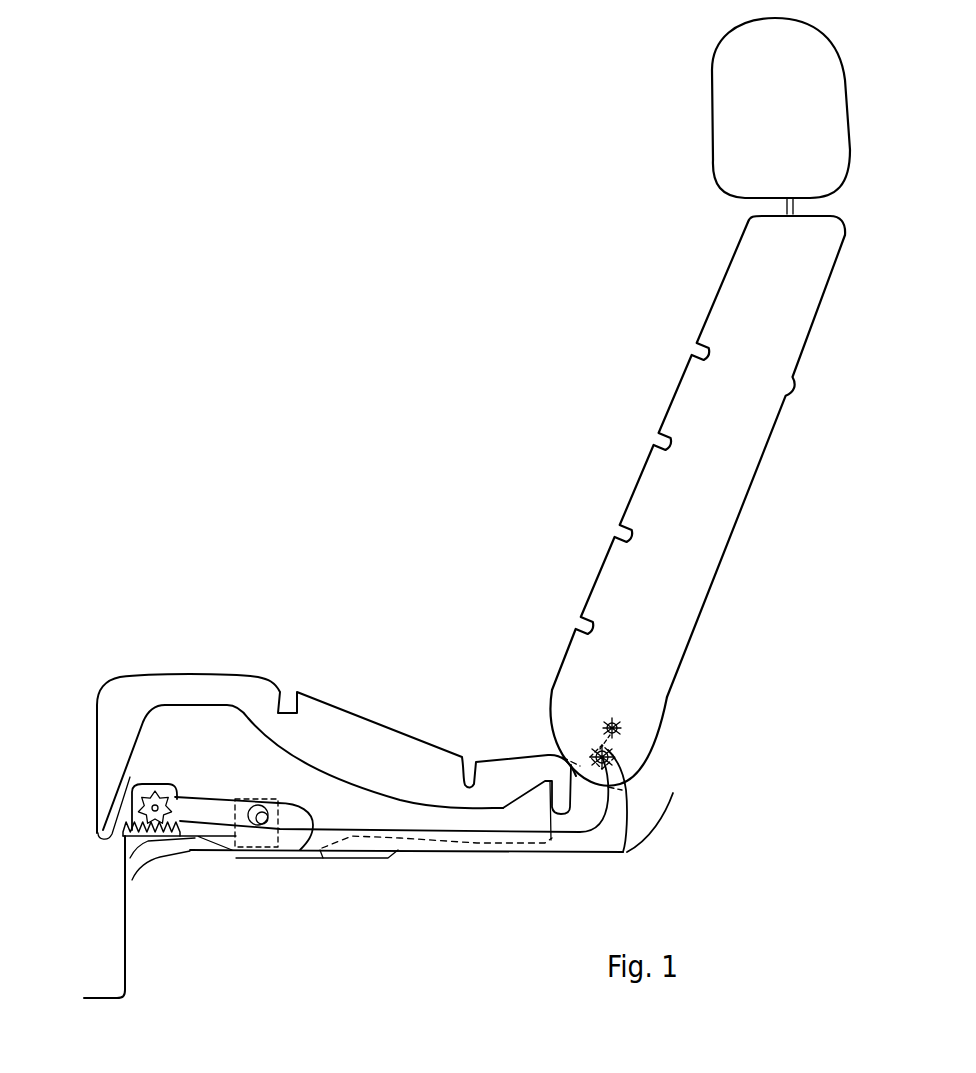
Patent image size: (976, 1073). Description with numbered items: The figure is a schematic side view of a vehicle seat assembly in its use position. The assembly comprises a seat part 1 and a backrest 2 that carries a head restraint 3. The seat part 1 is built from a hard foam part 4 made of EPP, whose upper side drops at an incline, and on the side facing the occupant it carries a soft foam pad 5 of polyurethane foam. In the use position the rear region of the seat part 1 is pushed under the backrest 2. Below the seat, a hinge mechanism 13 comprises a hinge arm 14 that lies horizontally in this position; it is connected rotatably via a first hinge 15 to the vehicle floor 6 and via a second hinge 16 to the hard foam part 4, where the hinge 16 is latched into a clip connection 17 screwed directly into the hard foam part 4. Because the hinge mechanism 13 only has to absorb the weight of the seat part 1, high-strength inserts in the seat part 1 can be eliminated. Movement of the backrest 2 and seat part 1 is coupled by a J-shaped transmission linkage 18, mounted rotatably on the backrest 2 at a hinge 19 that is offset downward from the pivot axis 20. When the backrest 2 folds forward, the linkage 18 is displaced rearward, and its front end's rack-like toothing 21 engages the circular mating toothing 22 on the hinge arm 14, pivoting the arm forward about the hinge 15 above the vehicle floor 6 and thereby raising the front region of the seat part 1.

The seat part 1 is at (138, 645).
The backrest 2 is at (570, 506).
The head restraint 3 is at (791, 112).
The hard foam part 4 is at (206, 766).
The soft foam pad 5 is at (428, 763).
The vehicle floor 6 is at (125, 933).
The hinge mechanism 13 is at (217, 896).
The hinge arm 14 is at (190, 851).
The first hinge 15 is at (132, 785).
The second hinge 16 is at (300, 850).
The clip connection 17 is at (245, 800).
The transmission linkage 18 is at (523, 834).
The hinge 19 is at (615, 758).
The pivot axis 20 is at (619, 725).
The rack-like toothing 21 is at (107, 838).
The mating toothing 22 is at (138, 806).